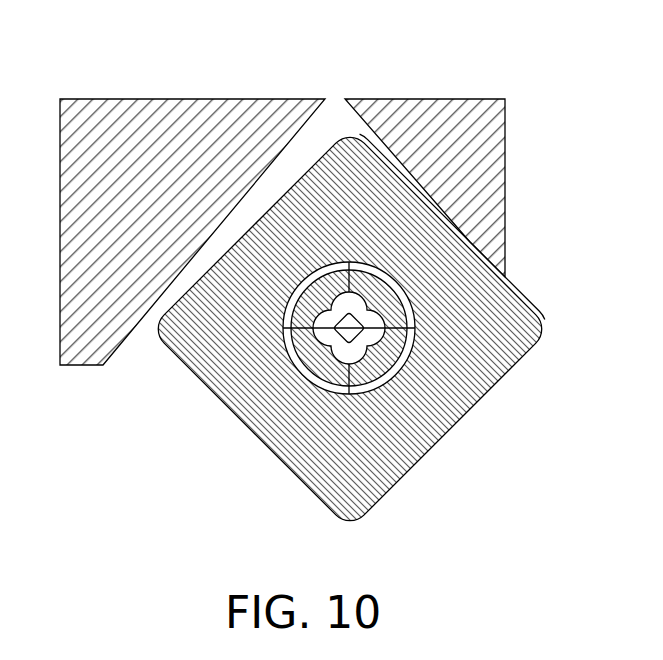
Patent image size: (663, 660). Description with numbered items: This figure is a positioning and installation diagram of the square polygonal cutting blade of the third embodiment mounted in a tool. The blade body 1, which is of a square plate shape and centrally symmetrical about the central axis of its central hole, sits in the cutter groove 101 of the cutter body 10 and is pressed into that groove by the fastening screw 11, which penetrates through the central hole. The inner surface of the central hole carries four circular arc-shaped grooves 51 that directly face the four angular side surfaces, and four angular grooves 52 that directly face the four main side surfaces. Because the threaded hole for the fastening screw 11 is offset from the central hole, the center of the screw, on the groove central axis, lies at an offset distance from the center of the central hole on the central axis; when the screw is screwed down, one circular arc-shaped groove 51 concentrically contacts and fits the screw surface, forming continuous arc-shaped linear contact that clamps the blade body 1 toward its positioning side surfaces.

The cutter body 10 is at (271, 204).
The angular groove 52 is at (314, 200).
The cutter groove 101 is at (373, 202).
The circular arc-shaped groove 51 is at (414, 288).
The blade body 1 is at (339, 277).
The fastening screw 11 is at (224, 392).